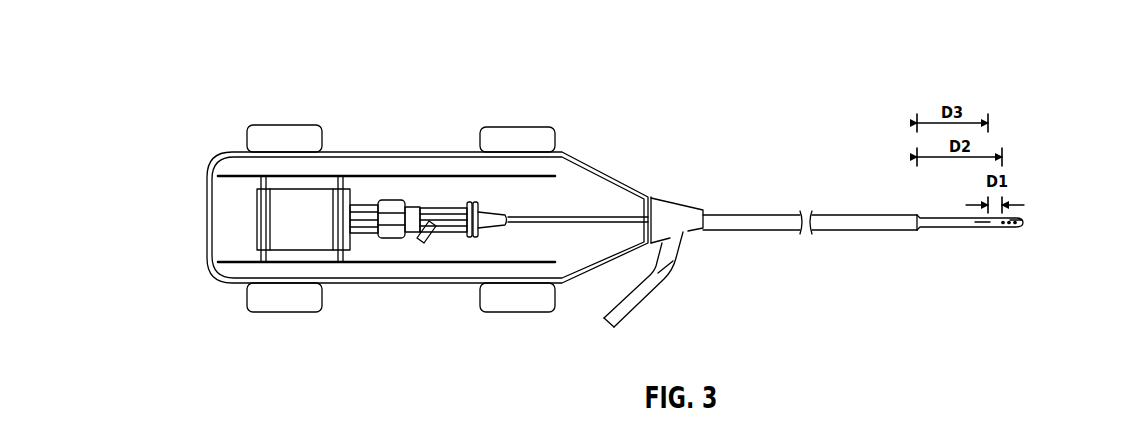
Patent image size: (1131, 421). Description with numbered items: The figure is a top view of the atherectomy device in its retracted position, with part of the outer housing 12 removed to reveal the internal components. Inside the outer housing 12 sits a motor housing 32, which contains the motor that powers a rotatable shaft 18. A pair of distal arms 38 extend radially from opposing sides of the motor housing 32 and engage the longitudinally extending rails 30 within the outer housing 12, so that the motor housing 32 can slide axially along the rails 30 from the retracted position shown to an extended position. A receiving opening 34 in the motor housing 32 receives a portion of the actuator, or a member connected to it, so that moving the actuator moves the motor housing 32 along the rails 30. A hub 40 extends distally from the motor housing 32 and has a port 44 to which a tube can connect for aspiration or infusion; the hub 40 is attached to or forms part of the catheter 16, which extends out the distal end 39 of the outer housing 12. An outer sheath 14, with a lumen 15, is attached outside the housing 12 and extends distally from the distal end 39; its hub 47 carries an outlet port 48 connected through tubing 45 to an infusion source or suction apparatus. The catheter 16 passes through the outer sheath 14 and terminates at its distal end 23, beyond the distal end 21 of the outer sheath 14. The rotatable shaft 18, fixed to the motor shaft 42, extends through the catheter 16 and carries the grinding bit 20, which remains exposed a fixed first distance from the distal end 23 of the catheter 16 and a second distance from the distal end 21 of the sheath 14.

The outer housing 12 is at (409, 110).
The outer sheath 14 is at (761, 216).
The lumen 15 is at (921, 217).
The catheter 16 is at (605, 217).
The rotatable shaft 18 is at (1015, 228).
The grinding bit or burr 20 is at (1010, 221).
The distal end of outer sheath 21 is at (920, 230).
The distal end of catheter 23 is at (983, 228).
The rails 30 is at (372, 176).
The motor housing 32 is at (318, 246).
The receiving opening 34 is at (302, 218).
The distal arms 38 is at (264, 176).
The distal end of housing 39 is at (649, 198).
The hub 40 is at (415, 206).
The motor shaft 42 is at (366, 236).
The port 44 is at (428, 241).
The tubing 45 is at (640, 311).
The hub 47 is at (683, 210).
The outlet port 48 is at (676, 262).